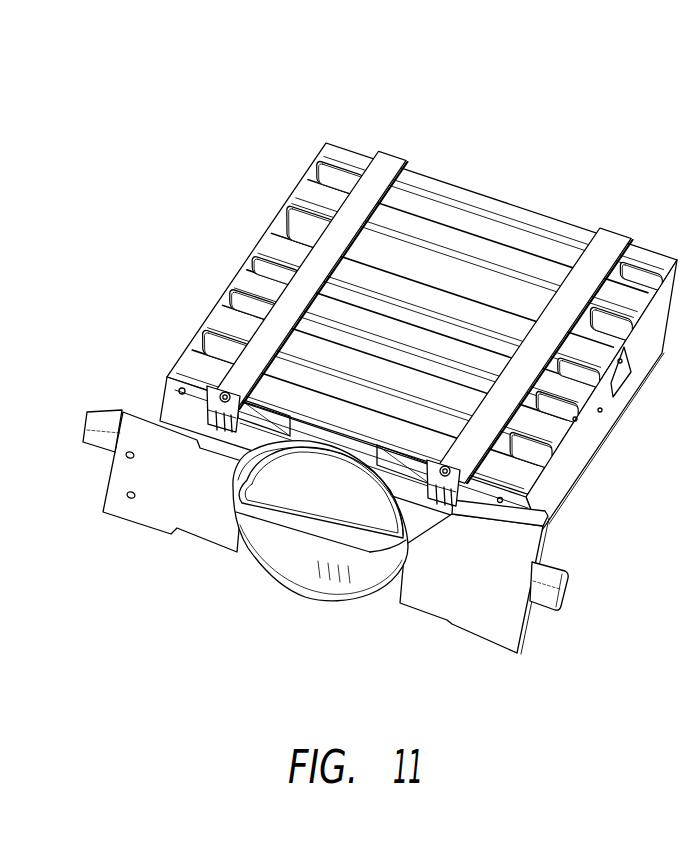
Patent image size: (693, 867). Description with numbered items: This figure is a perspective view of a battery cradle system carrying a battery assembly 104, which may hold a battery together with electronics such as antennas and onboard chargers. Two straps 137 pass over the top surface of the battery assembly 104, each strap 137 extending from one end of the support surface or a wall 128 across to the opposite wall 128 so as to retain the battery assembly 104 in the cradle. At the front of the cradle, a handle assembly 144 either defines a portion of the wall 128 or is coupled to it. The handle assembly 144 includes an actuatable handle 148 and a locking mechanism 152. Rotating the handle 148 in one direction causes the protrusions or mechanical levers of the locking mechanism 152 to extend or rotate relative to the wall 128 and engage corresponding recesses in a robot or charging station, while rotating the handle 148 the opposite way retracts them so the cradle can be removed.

The battery assembly 104 is at (361, 381).
The wall 128 is at (535, 210).
The strap 137 is at (370, 187).
The handle assembly 144 is at (320, 569).
The handle 148 is at (315, 540).
The locking mechanism 152 is at (80, 445).